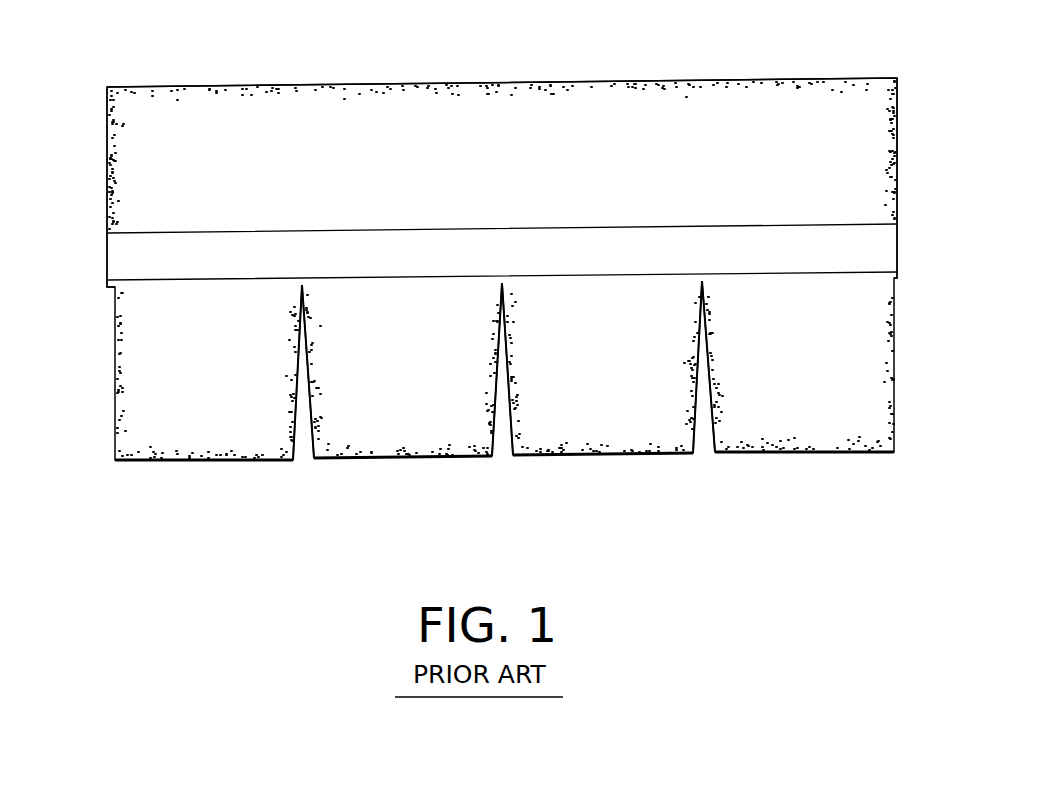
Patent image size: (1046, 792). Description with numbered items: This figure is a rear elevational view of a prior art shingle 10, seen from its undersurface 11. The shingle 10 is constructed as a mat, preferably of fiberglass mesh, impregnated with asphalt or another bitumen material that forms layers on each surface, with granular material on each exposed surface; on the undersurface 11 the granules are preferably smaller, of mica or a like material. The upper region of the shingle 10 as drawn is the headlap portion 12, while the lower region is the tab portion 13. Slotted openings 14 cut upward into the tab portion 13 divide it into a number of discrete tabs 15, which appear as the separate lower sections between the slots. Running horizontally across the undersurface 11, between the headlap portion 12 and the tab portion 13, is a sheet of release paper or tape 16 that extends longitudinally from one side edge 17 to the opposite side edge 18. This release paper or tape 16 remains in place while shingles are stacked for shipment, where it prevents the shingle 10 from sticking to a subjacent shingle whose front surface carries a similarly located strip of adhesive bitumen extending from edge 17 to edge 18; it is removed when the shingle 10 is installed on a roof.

The shingle 10 is at (390, 130).
The undersurface 11 is at (712, 125).
The headlap portion 12 is at (285, 136).
The tab portion 13 is at (163, 415).
The slotted openings 14 is at (302, 433).
The tabs 15 is at (410, 413).
The release paper or tape 16 is at (458, 243).
The edge 17 is at (106, 207).
The edge 18 is at (891, 172).